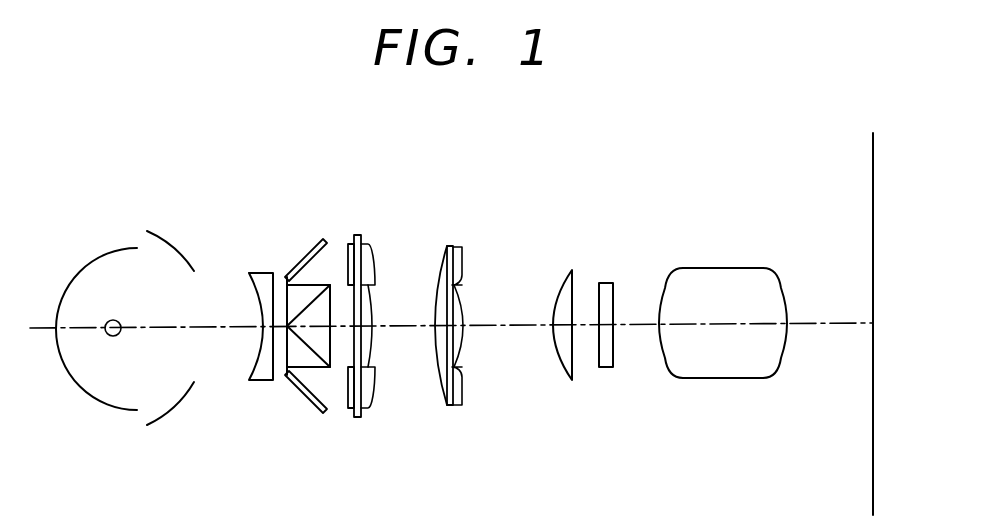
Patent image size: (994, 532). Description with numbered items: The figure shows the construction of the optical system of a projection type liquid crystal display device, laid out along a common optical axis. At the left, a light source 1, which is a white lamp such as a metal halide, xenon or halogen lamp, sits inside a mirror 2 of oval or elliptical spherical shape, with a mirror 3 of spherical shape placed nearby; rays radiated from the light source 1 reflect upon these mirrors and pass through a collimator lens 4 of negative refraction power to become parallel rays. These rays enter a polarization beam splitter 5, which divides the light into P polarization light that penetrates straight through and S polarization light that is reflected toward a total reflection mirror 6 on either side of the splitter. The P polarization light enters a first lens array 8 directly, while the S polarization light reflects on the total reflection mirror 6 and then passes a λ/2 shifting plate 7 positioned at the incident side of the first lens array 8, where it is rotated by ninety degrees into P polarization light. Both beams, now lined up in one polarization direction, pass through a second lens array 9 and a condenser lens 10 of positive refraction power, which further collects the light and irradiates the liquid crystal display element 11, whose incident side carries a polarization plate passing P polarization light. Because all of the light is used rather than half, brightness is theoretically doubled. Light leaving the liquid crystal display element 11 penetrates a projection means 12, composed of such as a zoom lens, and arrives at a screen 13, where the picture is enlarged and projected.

The light source 1 is at (119, 322).
The mirror of oval or elliptical spherical shape 2 is at (85, 380).
The mirror of spherical shape 3 is at (168, 243).
The collimator lens 4 is at (258, 382).
The polarization beam splitter 5 is at (323, 372).
The total reflection mirror 6 is at (302, 268).
The λ/2 shifting plate 7 is at (349, 243).
The first lens array 8 is at (359, 236).
The second lens array 9 is at (447, 246).
The condenser lens 10 is at (572, 270).
The liquid crystal display element 11 is at (609, 283).
The projection means 12 is at (728, 268).
The screen 13 is at (873, 188).